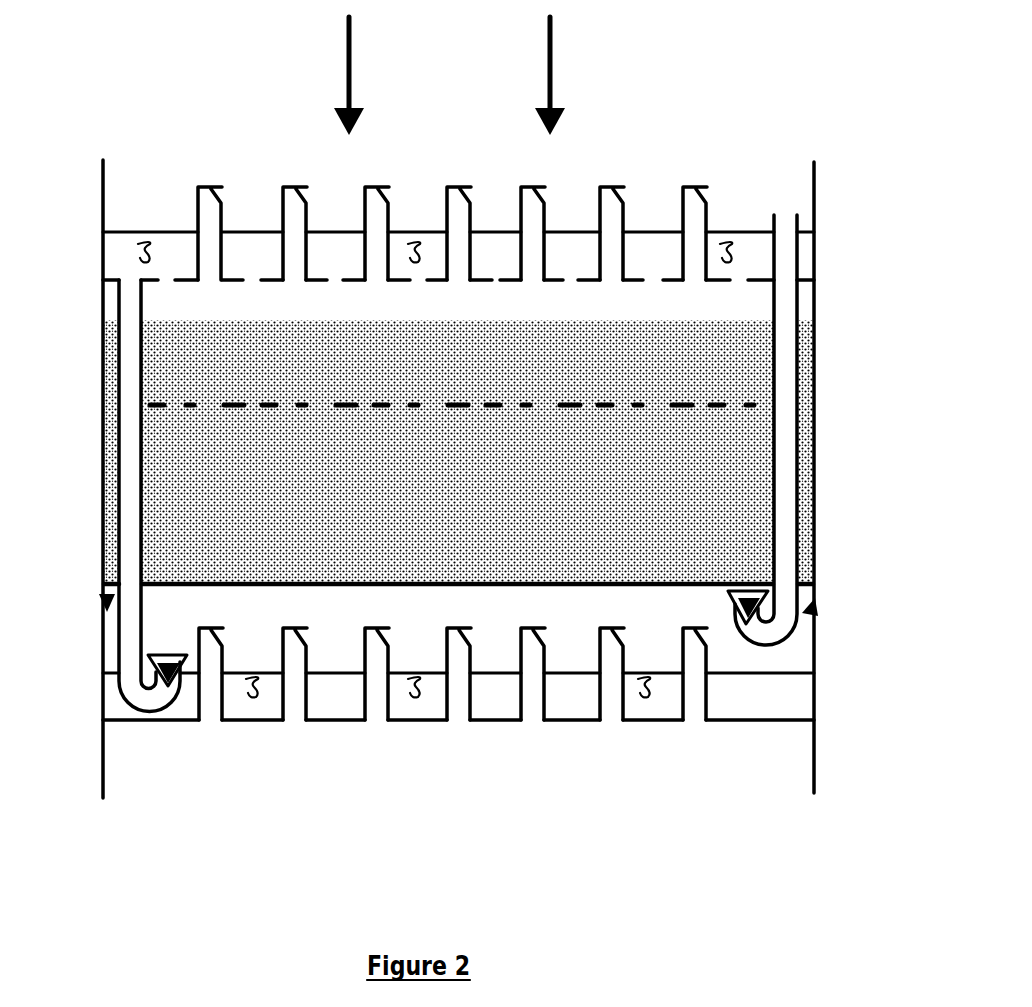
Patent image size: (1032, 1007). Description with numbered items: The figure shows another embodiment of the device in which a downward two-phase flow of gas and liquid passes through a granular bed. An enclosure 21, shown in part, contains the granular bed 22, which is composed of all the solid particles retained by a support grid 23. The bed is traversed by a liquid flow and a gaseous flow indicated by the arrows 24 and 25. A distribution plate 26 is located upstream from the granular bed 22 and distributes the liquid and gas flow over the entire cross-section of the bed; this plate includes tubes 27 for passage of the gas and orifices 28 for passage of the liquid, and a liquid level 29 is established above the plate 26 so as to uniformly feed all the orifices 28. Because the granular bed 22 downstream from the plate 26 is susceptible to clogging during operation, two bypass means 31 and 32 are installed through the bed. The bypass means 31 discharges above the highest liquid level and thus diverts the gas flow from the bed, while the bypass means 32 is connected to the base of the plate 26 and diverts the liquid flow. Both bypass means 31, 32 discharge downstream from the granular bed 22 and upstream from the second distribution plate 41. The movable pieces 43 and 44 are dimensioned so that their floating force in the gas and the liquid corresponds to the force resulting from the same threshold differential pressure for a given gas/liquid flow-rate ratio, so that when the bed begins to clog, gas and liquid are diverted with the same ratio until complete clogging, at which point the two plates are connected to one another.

The enclosure 21 is at (814, 755).
The granular bed 22 is at (740, 455).
The support grid 23 is at (430, 586).
The liquid flow arrow 24 is at (349, 70).
The gaseous flow arrow 25 is at (555, 60).
The distribution plate 26 is at (722, 280).
The tubes 27 is at (223, 215).
The orifices 28 is at (412, 280).
The liquid level 29 is at (147, 232).
The bypass means 31 is at (814, 600).
The bypass means 32 is at (104, 595).
The second distribution plate 41 is at (580, 722).
The movable piece 43 is at (168, 686).
The movable piece 44 is at (745, 624).